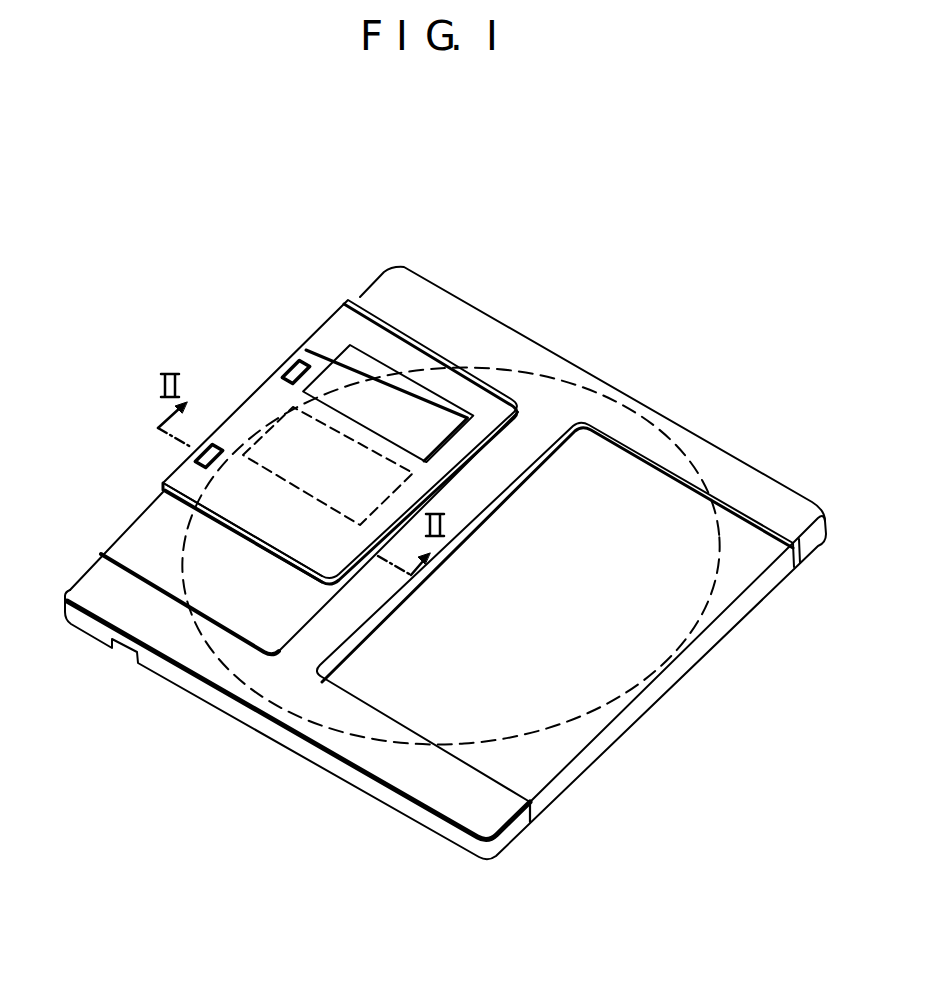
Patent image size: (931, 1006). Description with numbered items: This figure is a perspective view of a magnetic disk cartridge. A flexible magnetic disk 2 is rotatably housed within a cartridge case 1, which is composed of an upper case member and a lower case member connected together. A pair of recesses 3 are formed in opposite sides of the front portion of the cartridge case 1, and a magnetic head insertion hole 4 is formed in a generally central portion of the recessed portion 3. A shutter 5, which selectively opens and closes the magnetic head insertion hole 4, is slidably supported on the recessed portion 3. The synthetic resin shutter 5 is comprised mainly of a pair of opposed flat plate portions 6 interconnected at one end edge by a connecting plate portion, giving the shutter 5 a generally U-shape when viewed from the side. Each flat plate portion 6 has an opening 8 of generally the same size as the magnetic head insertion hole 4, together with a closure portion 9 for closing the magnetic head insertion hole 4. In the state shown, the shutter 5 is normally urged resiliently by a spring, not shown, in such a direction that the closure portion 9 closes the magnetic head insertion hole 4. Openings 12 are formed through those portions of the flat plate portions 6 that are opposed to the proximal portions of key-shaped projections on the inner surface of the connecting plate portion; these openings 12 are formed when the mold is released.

The cartridge case 1 is at (473, 320).
The flexible magnetic disk 2 is at (582, 386).
The recess 3 is at (141, 550).
The magnetic head insertion hole 4 is at (313, 500).
The shutter 5 is at (264, 383).
The flat plate portion 6 is at (243, 530).
The opening 8 is at (368, 356).
The closure portion 9 is at (244, 499).
The opening 12 is at (294, 364).